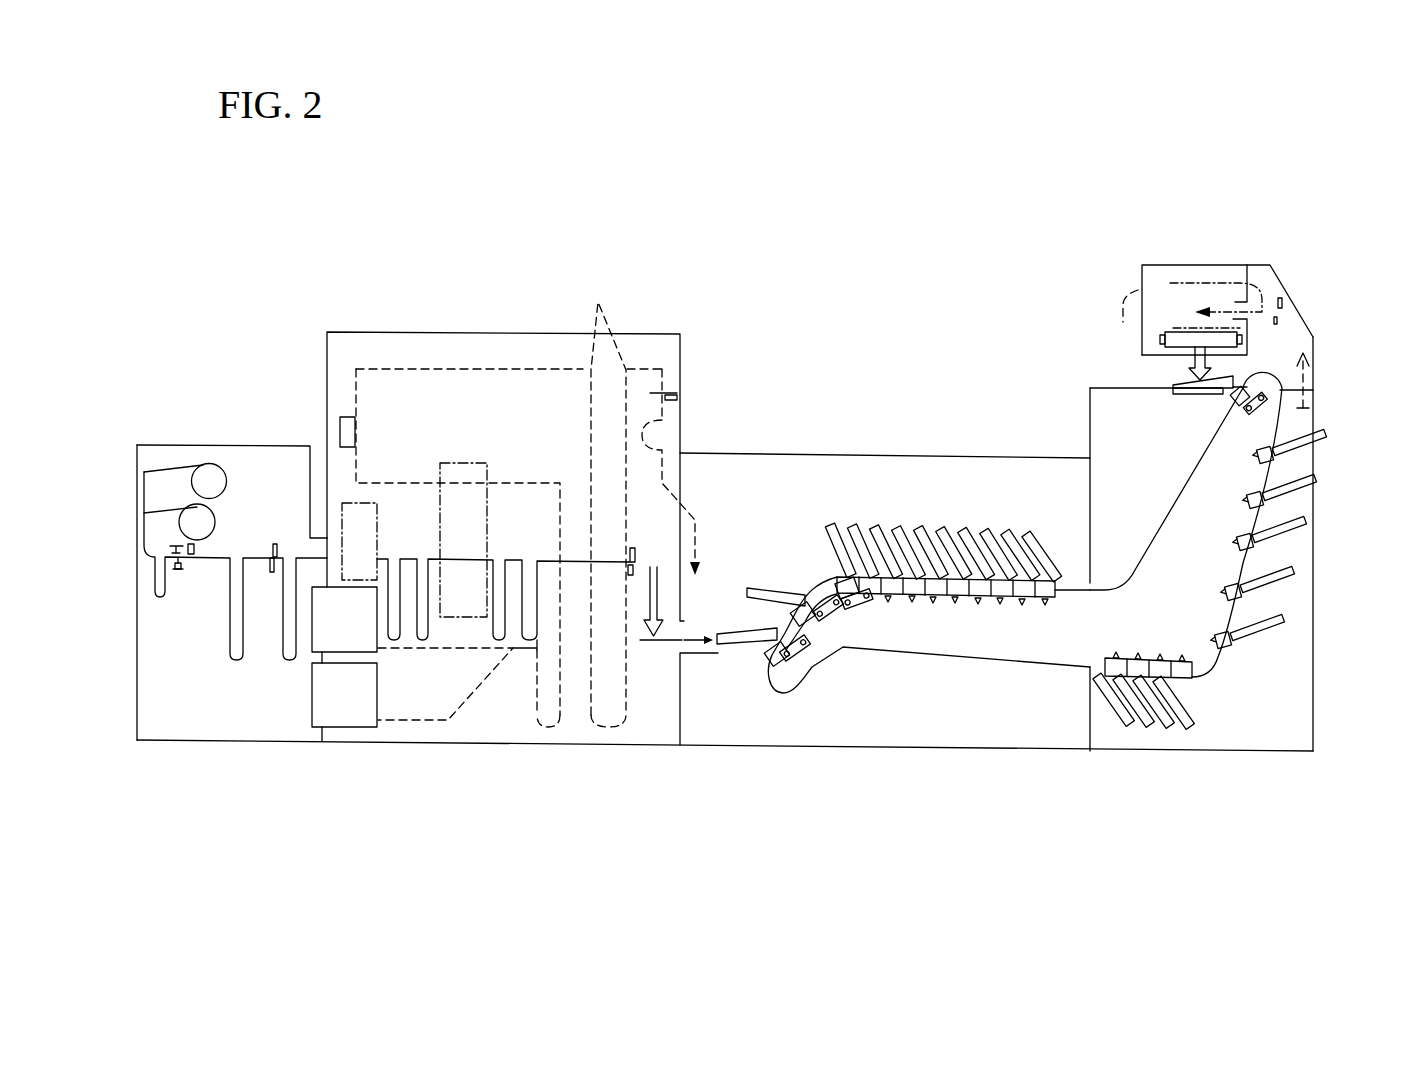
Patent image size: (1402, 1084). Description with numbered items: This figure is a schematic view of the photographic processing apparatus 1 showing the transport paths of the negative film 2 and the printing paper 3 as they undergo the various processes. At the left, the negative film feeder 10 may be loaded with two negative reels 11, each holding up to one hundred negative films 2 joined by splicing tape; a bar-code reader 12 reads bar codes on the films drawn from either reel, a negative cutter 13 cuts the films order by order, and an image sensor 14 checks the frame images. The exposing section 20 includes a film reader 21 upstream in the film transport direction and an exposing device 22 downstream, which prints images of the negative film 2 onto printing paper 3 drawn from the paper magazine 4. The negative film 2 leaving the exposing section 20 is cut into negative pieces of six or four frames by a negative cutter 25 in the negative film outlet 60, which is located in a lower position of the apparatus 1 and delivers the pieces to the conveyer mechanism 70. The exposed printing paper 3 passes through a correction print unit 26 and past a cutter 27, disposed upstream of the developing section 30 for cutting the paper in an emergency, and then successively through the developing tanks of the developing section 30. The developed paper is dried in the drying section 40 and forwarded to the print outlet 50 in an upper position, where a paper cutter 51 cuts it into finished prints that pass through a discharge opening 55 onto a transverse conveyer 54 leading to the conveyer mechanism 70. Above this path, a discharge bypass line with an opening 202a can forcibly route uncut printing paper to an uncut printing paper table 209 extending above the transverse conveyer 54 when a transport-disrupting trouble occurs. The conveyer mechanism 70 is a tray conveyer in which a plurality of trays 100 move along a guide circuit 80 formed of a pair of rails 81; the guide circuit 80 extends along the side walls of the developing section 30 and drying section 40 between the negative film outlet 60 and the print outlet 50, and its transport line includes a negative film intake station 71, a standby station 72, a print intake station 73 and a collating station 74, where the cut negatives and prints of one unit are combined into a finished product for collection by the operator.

The photographic processing apparatus 1 is at (640, 247).
The negative film 2 is at (517, 553).
The printing paper 3 is at (1312, 290).
The paper magazine 4 is at (373, 683).
The negative film feeder 10 is at (206, 433).
The negative reels 11 is at (213, 519).
The bar-code reader 12 is at (195, 549).
The negative cutter 13 is at (276, 544).
The image sensor 14 is at (178, 572).
The exposing section 20 is at (454, 393).
The film reader 21 is at (360, 503).
The exposing device 22 is at (470, 463).
The negative cutter 25 is at (633, 552).
The correction print unit 26 is at (343, 418).
The cutter 27 is at (667, 392).
The developing section 30 is at (932, 462).
The drying section 40 is at (1103, 412).
The print outlet 50 is at (1228, 252).
The paper cutter 51 is at (1283, 298).
The transverse conveyer 54 is at (1168, 330).
The discharge opening 55 is at (1213, 303).
The negative film outlet 60 is at (700, 622).
The conveyer mechanism 70 is at (1030, 677).
The negative film intake station 71 is at (740, 658).
The standby station 72 is at (1140, 735).
The print intake station 73 is at (1163, 378).
The collating station 74 is at (895, 518).
The guide circuit 80 is at (1147, 535).
The rails 81 is at (905, 650).
The trays 100 is at (752, 648).
The opening 202a is at (1232, 275).
The uncut printing paper table 209 is at (1195, 283).